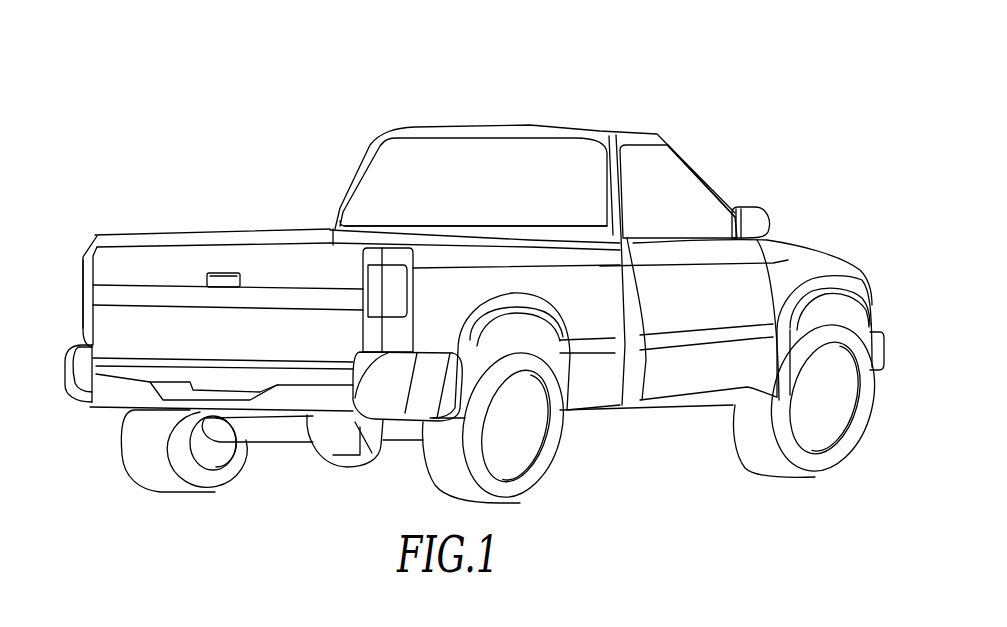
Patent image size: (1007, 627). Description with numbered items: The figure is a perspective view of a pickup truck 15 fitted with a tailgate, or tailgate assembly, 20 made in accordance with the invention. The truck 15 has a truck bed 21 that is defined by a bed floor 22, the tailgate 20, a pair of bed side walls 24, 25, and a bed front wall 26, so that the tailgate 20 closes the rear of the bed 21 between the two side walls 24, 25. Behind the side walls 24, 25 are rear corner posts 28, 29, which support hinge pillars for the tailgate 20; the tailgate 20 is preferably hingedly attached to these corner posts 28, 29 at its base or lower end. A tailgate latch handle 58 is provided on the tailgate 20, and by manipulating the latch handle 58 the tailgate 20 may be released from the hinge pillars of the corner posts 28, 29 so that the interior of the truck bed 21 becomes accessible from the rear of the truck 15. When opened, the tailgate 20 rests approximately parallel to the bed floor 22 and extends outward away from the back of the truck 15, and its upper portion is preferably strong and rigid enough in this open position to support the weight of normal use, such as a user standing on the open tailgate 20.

The pickup truck 15 is at (465, 256).
The tailgate 20 is at (100, 255).
The truck bed 21 is at (330, 225).
The bed floor 22 is at (217, 367).
The bed side wall 24 is at (284, 231).
The bed side wall 25 is at (580, 280).
The bed front wall 26 is at (428, 226).
The rear corner post 28 is at (82, 317).
The rear corner post 29 is at (362, 332).
The tailgate latch handle 58 is at (214, 275).